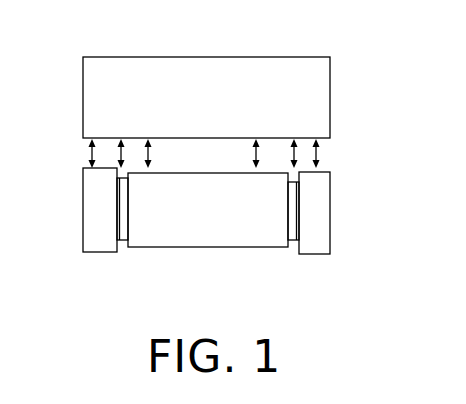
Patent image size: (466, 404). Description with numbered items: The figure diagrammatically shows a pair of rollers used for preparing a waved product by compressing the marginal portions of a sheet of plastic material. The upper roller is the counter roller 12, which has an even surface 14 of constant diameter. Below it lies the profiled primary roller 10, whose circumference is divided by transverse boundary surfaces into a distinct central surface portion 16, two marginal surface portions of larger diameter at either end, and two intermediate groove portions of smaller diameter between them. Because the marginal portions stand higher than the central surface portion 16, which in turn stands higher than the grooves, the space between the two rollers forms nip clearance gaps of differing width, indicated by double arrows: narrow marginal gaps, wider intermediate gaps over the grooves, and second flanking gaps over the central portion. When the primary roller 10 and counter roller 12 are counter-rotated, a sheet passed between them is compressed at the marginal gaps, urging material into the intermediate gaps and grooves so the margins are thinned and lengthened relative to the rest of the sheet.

The primary roller 10 is at (239, 243).
The counter roller 12 is at (249, 87).
The even surface 14 is at (330, 58).
The central surface portion 16 is at (210, 248).